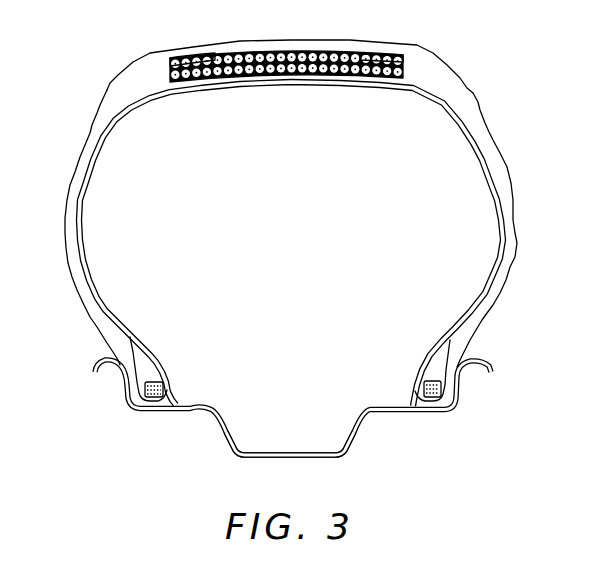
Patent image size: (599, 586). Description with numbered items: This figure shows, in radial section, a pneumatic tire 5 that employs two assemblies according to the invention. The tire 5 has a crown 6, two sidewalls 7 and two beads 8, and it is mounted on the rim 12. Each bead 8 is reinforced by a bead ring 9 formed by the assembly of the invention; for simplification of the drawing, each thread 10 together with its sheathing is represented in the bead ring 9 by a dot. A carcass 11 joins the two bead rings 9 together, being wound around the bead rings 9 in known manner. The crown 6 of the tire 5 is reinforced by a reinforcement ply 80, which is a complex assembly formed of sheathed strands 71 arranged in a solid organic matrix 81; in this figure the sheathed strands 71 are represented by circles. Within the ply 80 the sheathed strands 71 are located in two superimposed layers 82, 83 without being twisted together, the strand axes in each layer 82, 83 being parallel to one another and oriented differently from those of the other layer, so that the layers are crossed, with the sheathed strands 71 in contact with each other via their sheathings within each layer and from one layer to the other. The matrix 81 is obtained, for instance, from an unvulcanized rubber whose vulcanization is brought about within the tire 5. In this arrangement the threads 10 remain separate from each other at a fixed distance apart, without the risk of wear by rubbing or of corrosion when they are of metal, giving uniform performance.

The tire 5 is at (291, 203).
The crown 6 is at (442, 68).
The sidewalls 7 is at (68, 262).
The beads 8 is at (177, 388).
The bead ring 9 is at (153, 357).
The thread 10 is at (130, 402).
The carcass 11 is at (482, 143).
The rim 12 is at (278, 453).
The sheathed strands 71 is at (200, 62).
The reinforcement ply 80 is at (307, 74).
The organic matrix 81 is at (400, 56).
The layer 82 is at (259, 55).
The layer 83 is at (277, 78).